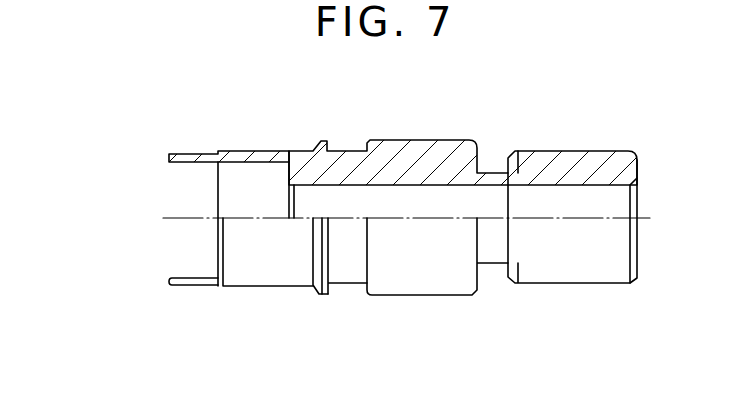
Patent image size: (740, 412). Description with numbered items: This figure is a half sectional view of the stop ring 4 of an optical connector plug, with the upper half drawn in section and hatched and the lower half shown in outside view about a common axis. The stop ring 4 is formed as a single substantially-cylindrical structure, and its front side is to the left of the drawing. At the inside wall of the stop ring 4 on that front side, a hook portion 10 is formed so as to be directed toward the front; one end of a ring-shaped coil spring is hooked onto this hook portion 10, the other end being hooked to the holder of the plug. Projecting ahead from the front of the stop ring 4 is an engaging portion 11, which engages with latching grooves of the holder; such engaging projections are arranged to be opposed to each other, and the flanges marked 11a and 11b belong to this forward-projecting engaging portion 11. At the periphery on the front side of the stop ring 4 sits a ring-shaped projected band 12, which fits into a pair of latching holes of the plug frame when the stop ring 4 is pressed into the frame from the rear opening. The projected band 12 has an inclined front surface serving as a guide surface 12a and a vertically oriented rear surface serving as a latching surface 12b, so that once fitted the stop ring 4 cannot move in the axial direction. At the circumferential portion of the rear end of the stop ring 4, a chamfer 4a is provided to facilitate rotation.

The stop ring 4 is at (558, 149).
The chamfer 4a is at (583, 265).
The hook portion 10 is at (289, 175).
The engaging portion 11 is at (123, 157).
The upper flange of contact 11a is at (183, 153).
The lower flange of contact 11b is at (182, 287).
The projected band 12 is at (323, 302).
The guide surface 12a is at (315, 260).
The latching surface 12b is at (328, 250).